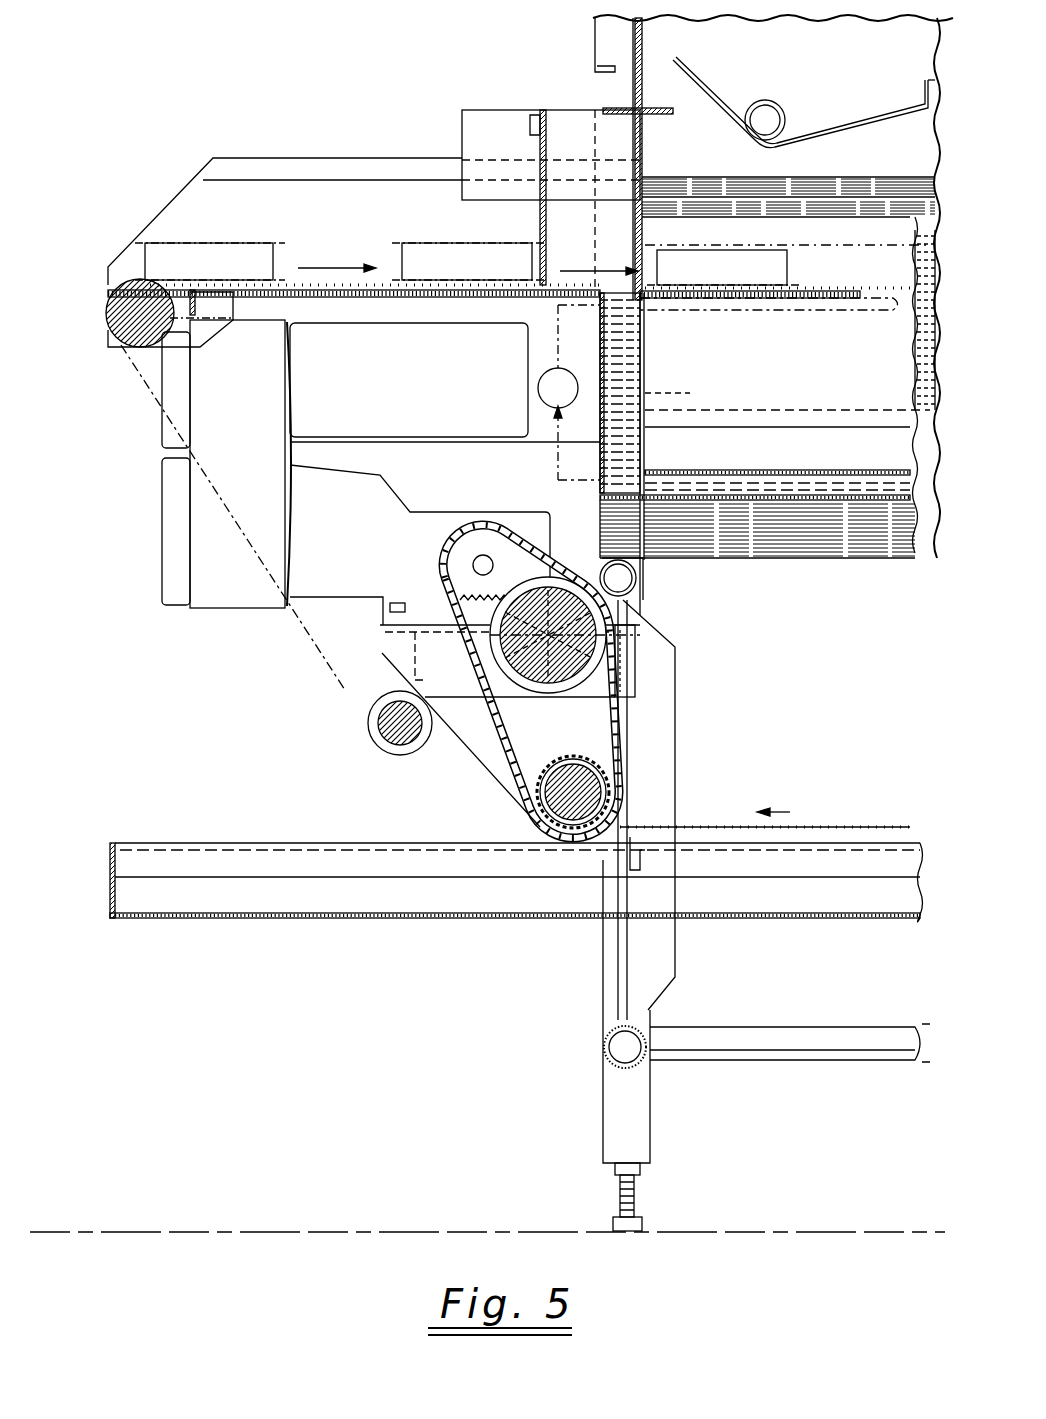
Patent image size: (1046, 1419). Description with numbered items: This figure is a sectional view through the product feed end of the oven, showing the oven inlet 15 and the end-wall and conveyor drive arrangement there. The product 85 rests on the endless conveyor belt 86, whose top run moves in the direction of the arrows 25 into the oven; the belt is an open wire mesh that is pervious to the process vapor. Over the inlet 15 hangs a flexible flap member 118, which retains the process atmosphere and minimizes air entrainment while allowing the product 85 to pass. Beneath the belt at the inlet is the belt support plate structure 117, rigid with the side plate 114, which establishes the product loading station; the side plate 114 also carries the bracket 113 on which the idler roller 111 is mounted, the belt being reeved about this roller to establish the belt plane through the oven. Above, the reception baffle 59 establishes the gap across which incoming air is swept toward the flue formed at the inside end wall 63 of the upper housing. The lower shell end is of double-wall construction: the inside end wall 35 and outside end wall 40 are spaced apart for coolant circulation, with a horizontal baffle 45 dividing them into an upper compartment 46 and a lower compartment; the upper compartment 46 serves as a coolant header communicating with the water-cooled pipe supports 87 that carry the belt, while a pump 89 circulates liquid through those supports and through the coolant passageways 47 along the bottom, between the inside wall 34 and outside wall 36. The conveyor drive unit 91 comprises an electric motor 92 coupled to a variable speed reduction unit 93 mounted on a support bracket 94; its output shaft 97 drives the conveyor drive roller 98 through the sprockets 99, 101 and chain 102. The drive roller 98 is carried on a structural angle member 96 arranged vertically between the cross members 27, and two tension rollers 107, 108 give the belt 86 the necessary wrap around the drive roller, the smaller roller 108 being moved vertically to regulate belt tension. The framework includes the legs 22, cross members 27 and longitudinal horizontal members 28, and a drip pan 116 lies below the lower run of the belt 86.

The oven inlet 15 is at (546, 226).
The legs 22 is at (640, 1133).
The arrows 25 is at (336, 266).
The cross members 27 is at (650, 600).
The longitudinally extending horizontal members 28 is at (780, 1030).
The inside wall 34 is at (818, 470).
The inside end wall 35 is at (645, 380).
The outside wall 36 is at (820, 500).
The outside end wall 40 is at (625, 360).
The horizontal baffle 45 is at (660, 392).
The upper compartment 46 is at (628, 345).
The coolant passageways 47 is at (872, 500).
The reception baffle 59 is at (712, 92).
The inside end wall 63 is at (645, 57).
The product 85 is at (195, 243).
The endless conveyor belt 86 is at (873, 292).
The pipe supports 87 is at (880, 300).
The pump 89 is at (545, 400).
The conveyor drive unit 91 is at (478, 430).
The electric motor 92 is at (409, 380).
The speed reduction unit 93 is at (420, 545).
The support bracket 94 is at (378, 640).
The structural angle member 96 is at (663, 762).
The output shaft 97 is at (485, 555).
The conveyor drive roller 98 is at (531, 822).
The sprocket 99 is at (462, 563).
The sprocket 101 is at (598, 727).
The chain 102 is at (487, 712).
The tension roller 107 is at (540, 668).
The tension roller 108 is at (400, 698).
The idler roller 111 is at (123, 338).
The bracket 113 is at (218, 340).
The side plate 114 is at (285, 221).
The drip pan 116 is at (420, 908).
The belt support plate structure 117 is at (437, 296).
The flexible flap member 118 is at (530, 152).